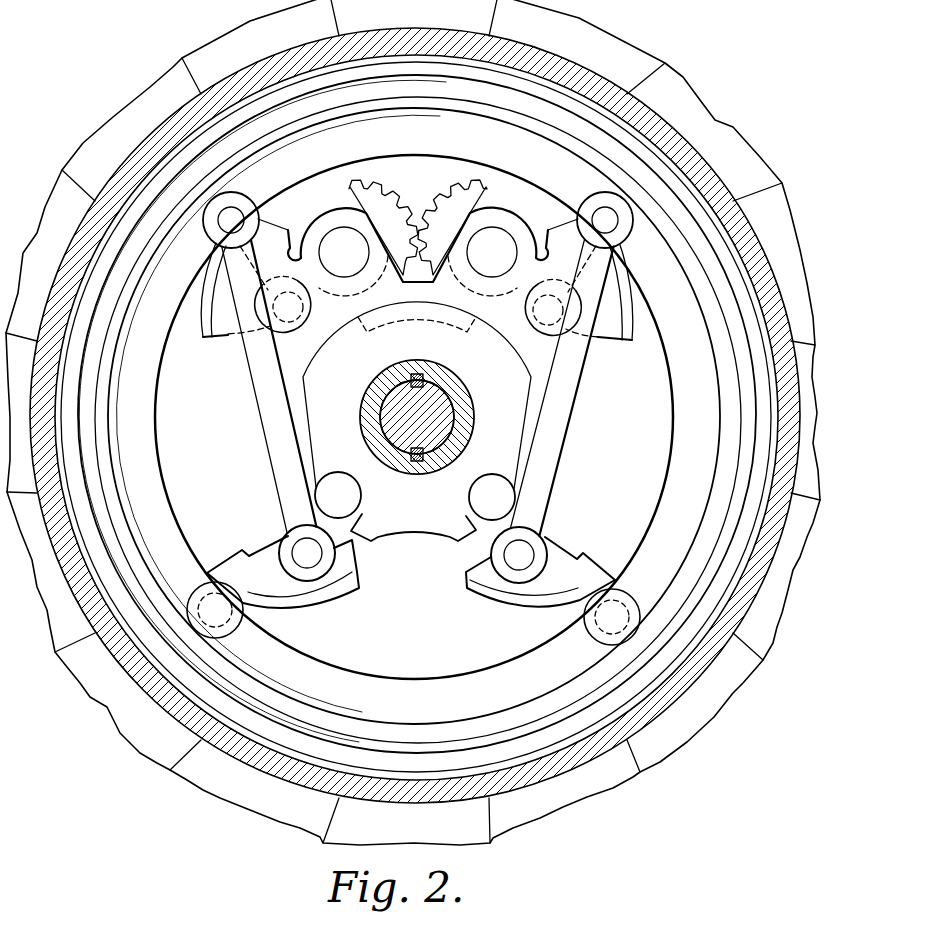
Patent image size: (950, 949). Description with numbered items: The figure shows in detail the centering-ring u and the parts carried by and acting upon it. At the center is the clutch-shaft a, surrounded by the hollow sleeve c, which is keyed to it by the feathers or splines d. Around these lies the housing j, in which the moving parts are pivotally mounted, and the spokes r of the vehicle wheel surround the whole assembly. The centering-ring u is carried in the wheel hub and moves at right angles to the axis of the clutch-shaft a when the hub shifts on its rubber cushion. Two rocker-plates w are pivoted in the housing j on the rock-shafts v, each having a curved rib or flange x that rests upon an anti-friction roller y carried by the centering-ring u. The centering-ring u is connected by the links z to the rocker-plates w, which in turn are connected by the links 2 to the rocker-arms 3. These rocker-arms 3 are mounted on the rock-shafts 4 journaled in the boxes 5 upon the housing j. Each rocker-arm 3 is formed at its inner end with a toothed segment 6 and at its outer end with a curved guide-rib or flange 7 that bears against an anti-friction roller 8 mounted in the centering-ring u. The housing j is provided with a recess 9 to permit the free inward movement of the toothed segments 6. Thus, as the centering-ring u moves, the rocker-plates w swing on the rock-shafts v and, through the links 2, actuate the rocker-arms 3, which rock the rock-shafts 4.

The spokes r is at (717, 122).
The centering-ring u is at (693, 475).
The housing j is at (417, 421).
The depression or recess 9 is at (458, 333).
The clutch-shaft a is at (385, 423).
The hollow shaft or sleeve c is at (398, 460).
The feathers or splines d is at (417, 376).
The boxes 5 is at (327, 217).
The rock-shafts 4 is at (418, 252).
The toothed segment 6 is at (430, 190).
The anti-friction roller 8 is at (250, 198).
The curved guide-rib or flange 7 is at (203, 322).
The rocker-arms 3 is at (223, 338).
The links 2 is at (303, 400).
The links z is at (263, 398).
The rocker-plates w is at (410, 554).
The rock-shafts v is at (415, 496).
The curved rib or flange x is at (333, 597).
The anti-friction rollers y is at (247, 635).